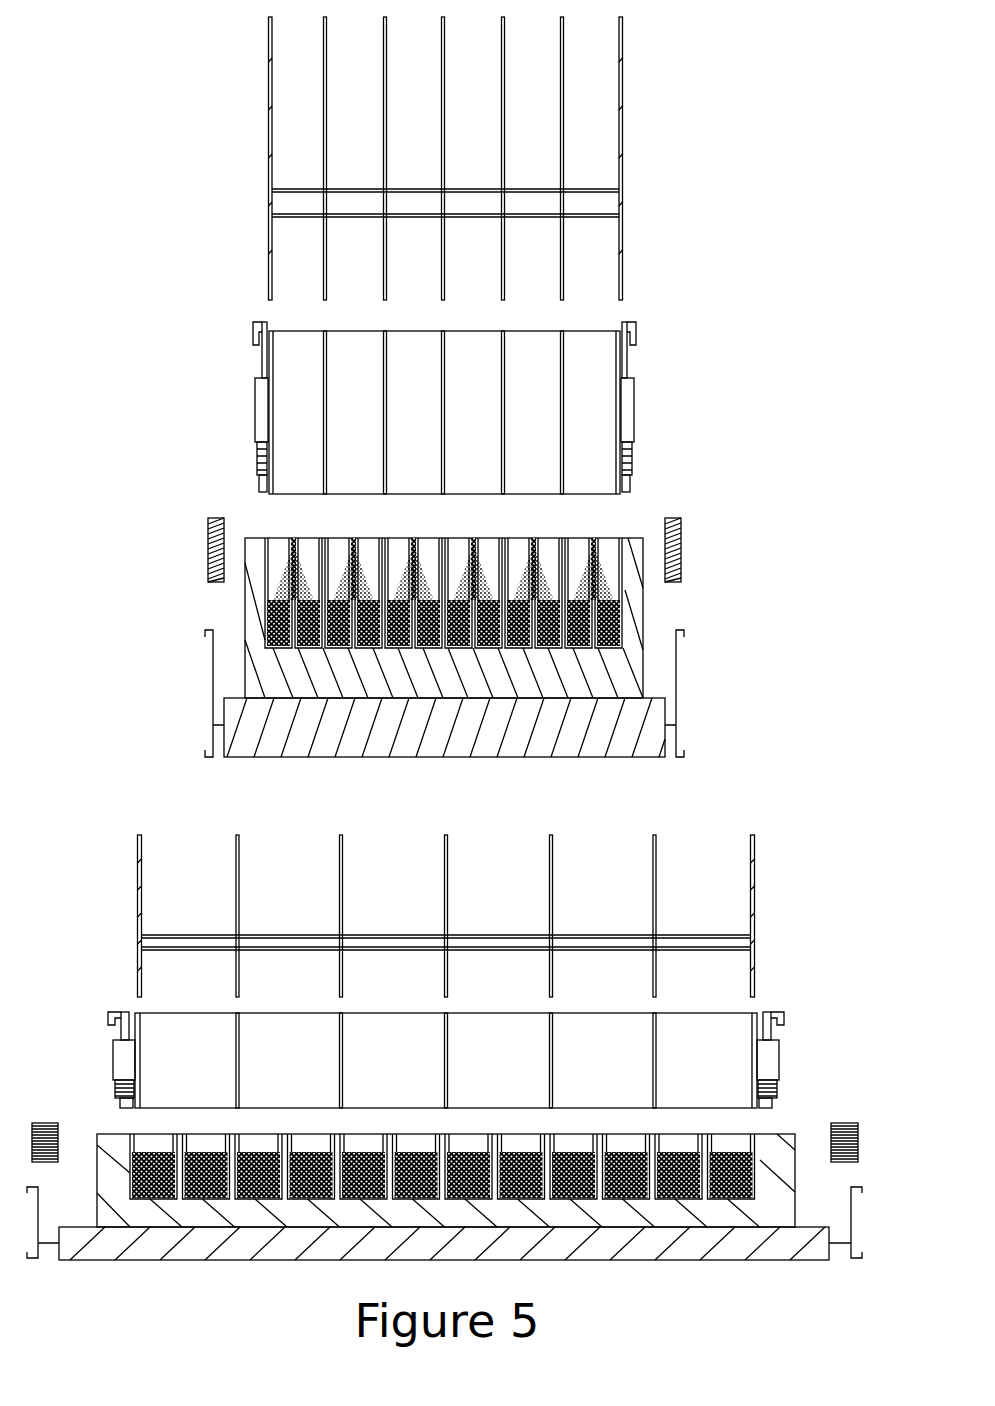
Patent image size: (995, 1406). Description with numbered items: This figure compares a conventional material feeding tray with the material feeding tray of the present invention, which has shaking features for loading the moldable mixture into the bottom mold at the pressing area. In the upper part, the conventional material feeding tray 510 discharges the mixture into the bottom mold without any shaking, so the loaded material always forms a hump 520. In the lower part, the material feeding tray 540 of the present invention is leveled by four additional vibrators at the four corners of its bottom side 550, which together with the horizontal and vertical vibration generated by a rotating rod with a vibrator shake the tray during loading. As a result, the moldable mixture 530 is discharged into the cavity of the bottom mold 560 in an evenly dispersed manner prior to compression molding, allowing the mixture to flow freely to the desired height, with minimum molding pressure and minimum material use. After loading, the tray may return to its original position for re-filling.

The conventional material feeding tray 510 is at (295, 425).
The hump 520 is at (280, 570).
The moldable mixture 530 is at (150, 1152).
The material feeding tray 540 is at (487, 1040).
The vibrators at four corners of the material feeding tray 550 is at (780, 1034).
The bottom mold 560 is at (435, 1199).